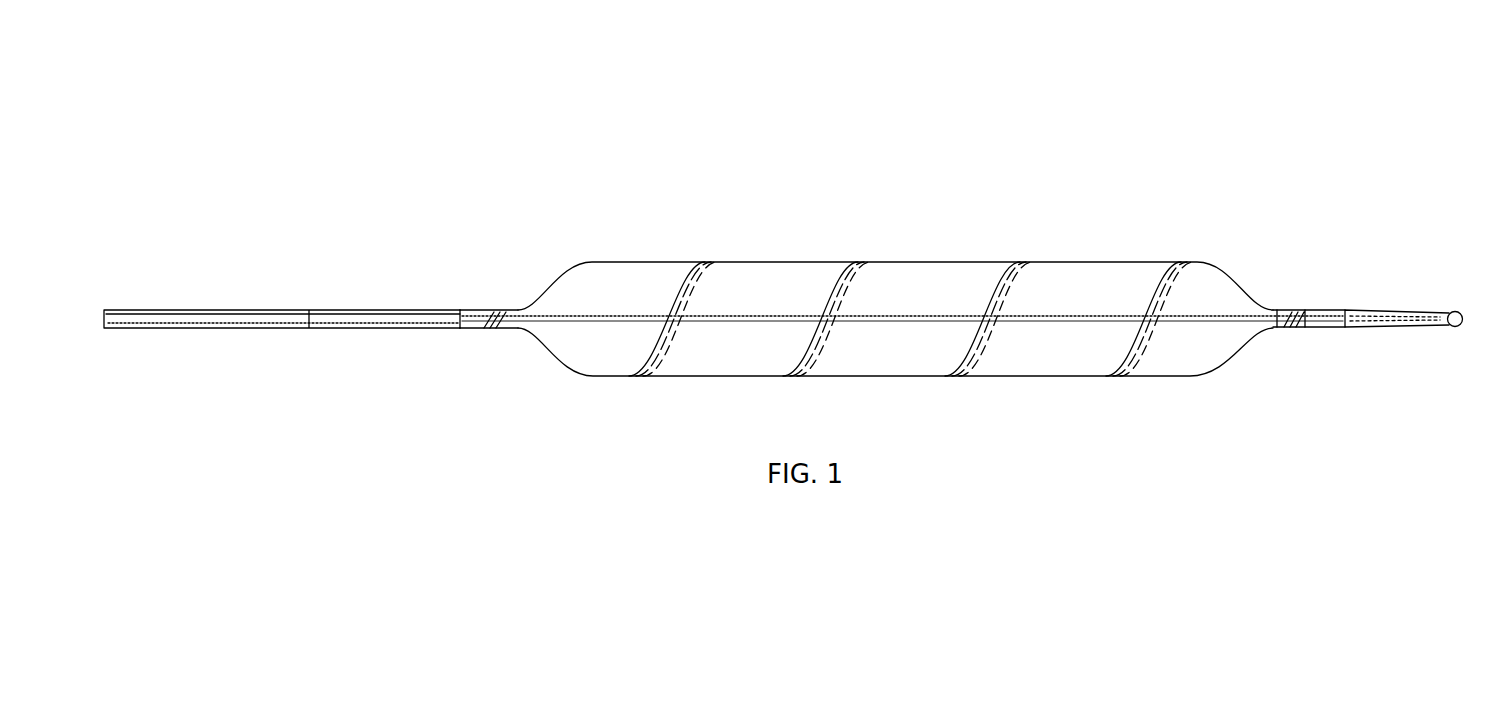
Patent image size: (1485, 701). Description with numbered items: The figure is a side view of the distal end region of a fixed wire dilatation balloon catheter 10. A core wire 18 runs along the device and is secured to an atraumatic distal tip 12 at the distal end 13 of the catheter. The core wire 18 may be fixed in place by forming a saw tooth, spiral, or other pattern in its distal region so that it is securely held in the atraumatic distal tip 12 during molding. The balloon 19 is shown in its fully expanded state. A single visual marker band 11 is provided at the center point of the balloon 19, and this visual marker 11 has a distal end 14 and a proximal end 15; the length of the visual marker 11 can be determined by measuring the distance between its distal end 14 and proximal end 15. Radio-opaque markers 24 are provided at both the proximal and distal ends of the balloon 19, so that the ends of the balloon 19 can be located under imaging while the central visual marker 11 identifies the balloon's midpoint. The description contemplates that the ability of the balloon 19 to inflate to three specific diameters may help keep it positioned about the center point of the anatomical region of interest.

The fixed wire dilatation balloon catheter 10 is at (736, 56).
The visual marker band 11 is at (344, 315).
The atraumatic distal tip 12 is at (1448, 328).
The distal end 13 is at (1357, 321).
The distal end of visual marker 14 is at (959, 318).
The proximal end of visual marker 15 is at (892, 318).
The core wire 18 is at (782, 318).
The balloon 19 is at (652, 262).
The radio-opaque markers 24 is at (462, 318).